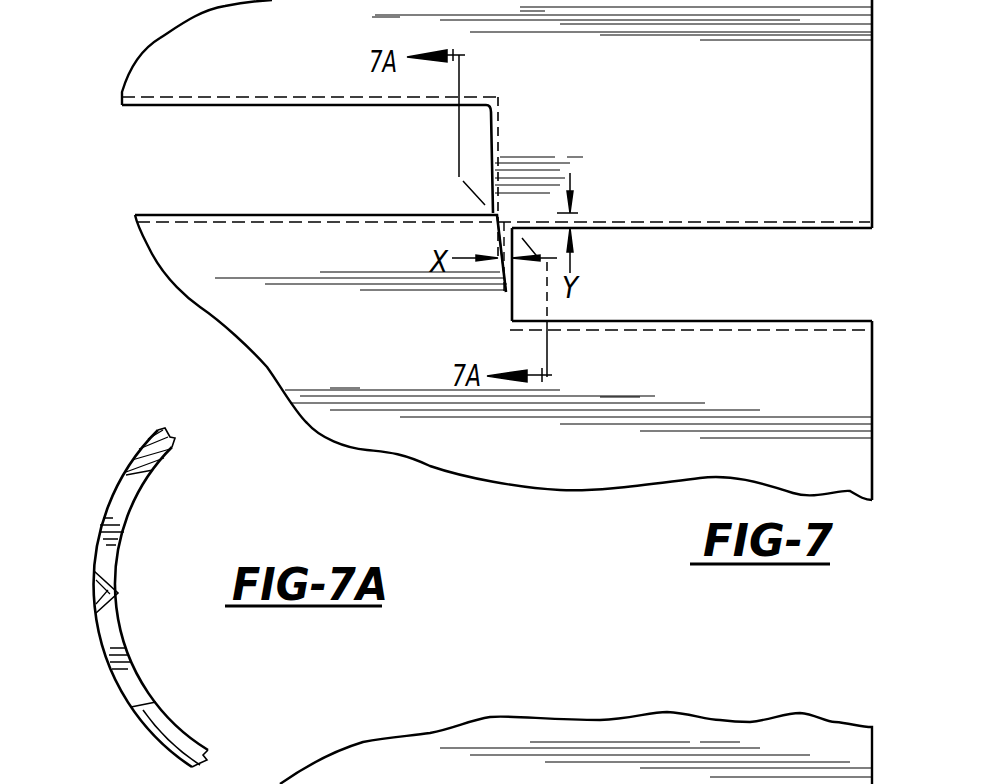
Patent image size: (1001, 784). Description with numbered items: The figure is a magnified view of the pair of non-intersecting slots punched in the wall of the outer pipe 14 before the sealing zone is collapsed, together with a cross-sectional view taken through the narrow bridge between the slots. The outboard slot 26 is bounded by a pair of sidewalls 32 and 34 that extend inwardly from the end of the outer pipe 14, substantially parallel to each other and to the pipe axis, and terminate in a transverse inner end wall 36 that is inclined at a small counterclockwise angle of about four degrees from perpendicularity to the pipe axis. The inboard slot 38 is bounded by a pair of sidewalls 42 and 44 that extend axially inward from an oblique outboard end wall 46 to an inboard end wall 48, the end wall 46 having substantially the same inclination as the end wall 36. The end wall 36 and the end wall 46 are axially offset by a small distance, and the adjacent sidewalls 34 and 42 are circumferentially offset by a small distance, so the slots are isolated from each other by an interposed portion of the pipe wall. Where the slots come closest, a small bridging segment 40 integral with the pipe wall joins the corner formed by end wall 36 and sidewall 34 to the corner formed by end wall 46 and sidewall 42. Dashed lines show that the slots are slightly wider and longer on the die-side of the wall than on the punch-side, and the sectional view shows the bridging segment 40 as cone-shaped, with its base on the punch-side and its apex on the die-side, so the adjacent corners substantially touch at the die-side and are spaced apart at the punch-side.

In FIG. 7A, the outer pipe 14 is at (207, 722).
In FIG. 7, the outboard slot 26 is at (790, 283).
In FIG. 7, the sidewall 32 is at (731, 320).
In FIG. 7, the sidewall 34 is at (722, 229).
In FIG. 7, the inner end wall 36 is at (512, 290).
In FIG. 7A, the inner end wall 36 is at (132, 661).
In FIG. 7, the inboard slot 38 is at (205, 156).
In FIG. 7, the bridging segment 40 is at (507, 229).
In FIG. 7A, the bridging segment 40 is at (97, 593).
In FIG. 7, the sidewall 42 is at (372, 214).
In FIG. 7, the sidewall 44 is at (299, 101).
In FIG. 7, the outboard end wall 46 is at (492, 119).
In FIG. 7A, the inboard end wall 48 is at (123, 535).